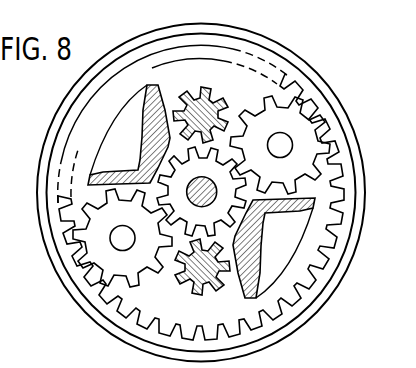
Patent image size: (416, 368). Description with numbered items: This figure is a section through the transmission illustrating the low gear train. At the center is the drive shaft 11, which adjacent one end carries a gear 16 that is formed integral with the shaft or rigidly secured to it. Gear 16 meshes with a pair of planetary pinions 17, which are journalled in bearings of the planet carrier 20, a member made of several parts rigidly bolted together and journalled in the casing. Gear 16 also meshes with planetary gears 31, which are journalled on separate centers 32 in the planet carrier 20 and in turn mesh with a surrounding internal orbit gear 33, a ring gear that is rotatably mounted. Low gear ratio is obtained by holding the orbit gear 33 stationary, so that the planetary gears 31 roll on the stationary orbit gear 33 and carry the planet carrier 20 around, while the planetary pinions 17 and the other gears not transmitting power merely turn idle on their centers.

The drive shaft 11 is at (150, 138).
The gear 16 is at (250, 218).
The planetary pinions 17 is at (211, 98).
The planet carrier 20 is at (157, 133).
The planetary gears 31 is at (310, 140).
The centers 32 is at (281, 146).
The internal orbit gear 33 is at (320, 273).